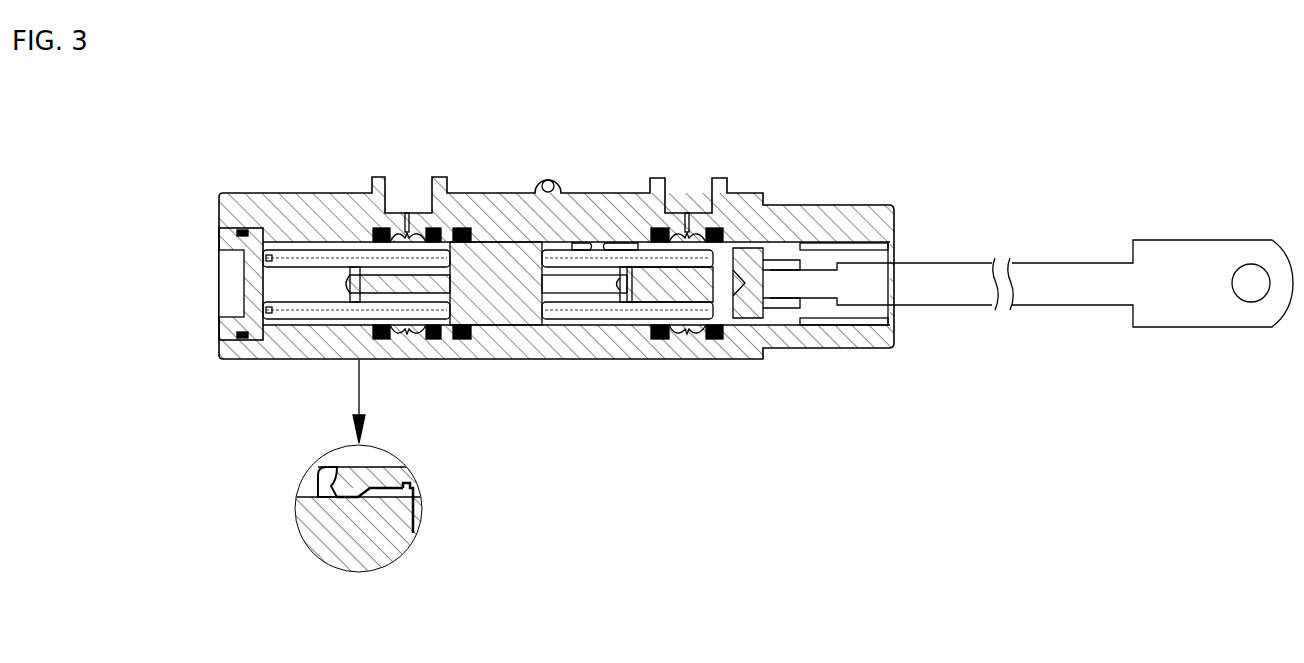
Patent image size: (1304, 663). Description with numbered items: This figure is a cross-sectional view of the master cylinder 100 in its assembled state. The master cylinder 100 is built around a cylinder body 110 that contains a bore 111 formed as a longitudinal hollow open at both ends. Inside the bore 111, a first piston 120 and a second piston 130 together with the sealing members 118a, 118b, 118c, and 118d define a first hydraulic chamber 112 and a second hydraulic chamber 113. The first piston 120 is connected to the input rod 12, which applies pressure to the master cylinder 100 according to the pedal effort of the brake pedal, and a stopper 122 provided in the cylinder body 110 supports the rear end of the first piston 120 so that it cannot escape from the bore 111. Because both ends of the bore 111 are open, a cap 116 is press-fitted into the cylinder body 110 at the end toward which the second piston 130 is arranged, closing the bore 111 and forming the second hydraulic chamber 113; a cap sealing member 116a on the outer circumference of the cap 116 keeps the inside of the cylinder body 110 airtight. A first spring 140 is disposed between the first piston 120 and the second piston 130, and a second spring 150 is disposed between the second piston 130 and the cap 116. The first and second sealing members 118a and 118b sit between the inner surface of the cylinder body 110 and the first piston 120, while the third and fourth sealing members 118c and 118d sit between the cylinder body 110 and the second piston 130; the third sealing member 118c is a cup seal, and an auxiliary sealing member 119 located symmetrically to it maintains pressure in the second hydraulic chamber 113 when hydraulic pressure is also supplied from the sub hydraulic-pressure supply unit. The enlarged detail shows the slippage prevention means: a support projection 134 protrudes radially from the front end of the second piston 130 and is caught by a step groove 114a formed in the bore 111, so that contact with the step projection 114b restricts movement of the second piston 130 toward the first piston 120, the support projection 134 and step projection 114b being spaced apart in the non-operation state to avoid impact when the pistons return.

The master cylinder 100 is at (884, 184).
The cylinder body 110 is at (495, 202).
The bore 111 is at (590, 245).
The first hydraulic chamber 112 is at (613, 247).
The second hydraulic chamber 113 is at (310, 247).
The cap 116 is at (255, 282).
The cap sealing member 116a is at (243, 229).
The first sealing member 118a is at (715, 340).
The second sealing member 118b is at (665, 339).
The third sealing member 118c is at (432, 339).
The fourth sealing member 118d is at (380, 338).
The auxiliary sealing member 119 is at (463, 340).
The first piston 120 is at (735, 332).
The stopper 122 is at (895, 243).
The second piston 130 is at (507, 316).
The first spring 140 is at (550, 324).
The second spring 150 is at (268, 257).
The support projection 134 is at (337, 482).
The step groove 114a is at (308, 492).
The step projection 114b is at (388, 493).
The input rod 12 is at (1053, 272).